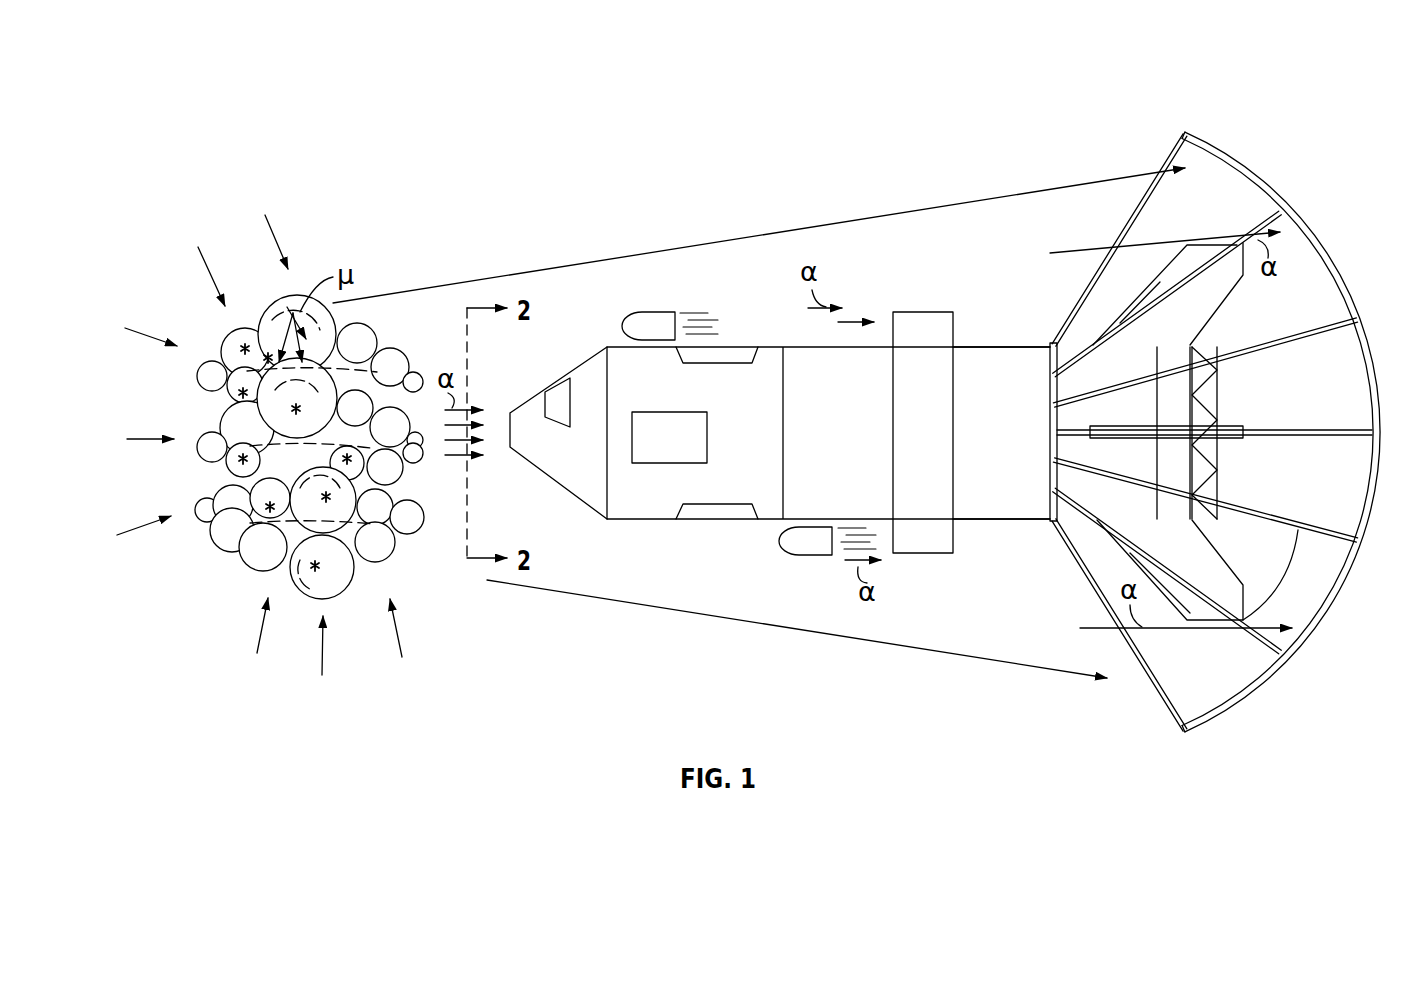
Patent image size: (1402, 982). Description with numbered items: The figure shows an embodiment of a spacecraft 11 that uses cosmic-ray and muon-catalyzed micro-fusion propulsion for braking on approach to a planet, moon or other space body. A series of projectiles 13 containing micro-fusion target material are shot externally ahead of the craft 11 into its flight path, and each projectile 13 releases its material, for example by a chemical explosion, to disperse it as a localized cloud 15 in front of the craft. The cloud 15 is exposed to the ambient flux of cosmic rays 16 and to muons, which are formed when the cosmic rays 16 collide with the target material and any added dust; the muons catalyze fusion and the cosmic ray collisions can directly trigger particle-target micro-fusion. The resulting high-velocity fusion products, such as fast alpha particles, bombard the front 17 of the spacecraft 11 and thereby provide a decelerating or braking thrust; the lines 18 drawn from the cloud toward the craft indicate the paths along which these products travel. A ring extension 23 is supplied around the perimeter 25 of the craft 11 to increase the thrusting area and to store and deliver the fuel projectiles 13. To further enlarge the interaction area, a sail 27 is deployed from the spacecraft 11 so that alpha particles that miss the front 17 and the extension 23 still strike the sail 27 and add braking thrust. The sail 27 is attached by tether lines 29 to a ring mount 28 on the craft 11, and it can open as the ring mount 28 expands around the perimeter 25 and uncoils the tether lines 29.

The spacecraft 11 is at (187, 127).
The projectiles 13 is at (666, 313).
The localized cloud 15 is at (196, 376).
The cosmic rays 16 is at (206, 271).
The front of the spacecraft 17 is at (505, 446).
The light rays 18 is at (663, 608).
The ring extension 23 is at (925, 554).
The perimeter 25 is at (1002, 520).
The sail 27 is at (1250, 168).
The ring mount 28 is at (1048, 434).
The tether lines 29 is at (1125, 229).